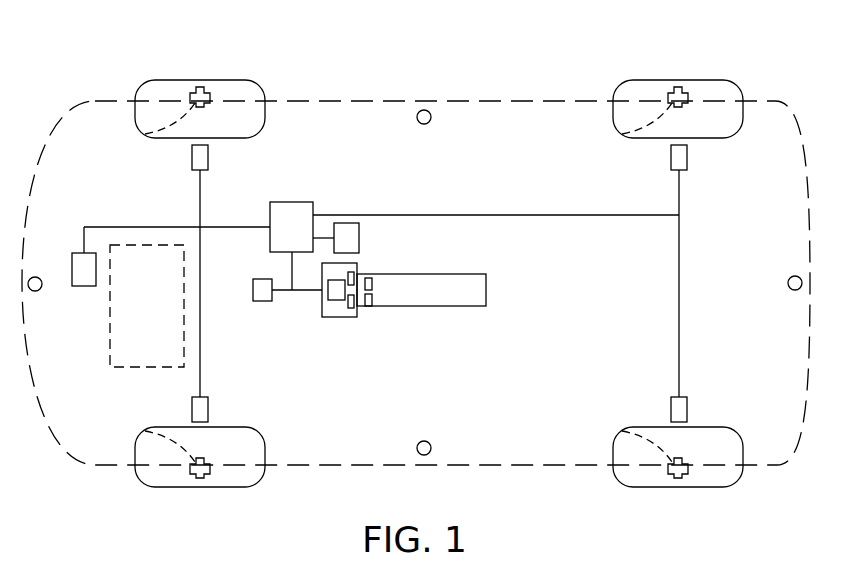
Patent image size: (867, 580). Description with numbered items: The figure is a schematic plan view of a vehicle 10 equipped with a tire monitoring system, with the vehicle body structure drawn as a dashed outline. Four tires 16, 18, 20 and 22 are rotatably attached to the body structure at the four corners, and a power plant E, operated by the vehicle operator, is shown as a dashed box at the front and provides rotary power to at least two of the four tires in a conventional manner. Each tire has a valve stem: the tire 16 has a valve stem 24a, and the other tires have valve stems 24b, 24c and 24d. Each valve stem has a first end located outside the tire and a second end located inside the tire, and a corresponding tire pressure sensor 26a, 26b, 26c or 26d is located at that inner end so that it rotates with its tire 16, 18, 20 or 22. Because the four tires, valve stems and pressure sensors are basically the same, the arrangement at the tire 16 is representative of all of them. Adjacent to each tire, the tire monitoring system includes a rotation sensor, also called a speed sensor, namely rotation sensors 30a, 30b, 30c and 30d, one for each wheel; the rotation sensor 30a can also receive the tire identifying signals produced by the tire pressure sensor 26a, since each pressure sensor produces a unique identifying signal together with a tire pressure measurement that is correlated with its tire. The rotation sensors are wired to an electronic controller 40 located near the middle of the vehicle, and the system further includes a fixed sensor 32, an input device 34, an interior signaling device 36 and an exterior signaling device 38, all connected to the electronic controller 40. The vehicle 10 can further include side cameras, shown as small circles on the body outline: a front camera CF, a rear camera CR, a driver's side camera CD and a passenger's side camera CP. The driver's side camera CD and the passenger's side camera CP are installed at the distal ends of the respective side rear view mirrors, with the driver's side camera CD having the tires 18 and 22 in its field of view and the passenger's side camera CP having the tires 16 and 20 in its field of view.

The vehicle 10 is at (522, 58).
The tire 16 is at (168, 80).
The tire 18 is at (168, 487).
The tire 20 is at (647, 80).
The tire 22 is at (647, 487).
The valve stem 24a is at (210, 88).
The valve stem 24b is at (215, 482).
The valve stem 24c is at (690, 88).
The valve stem 24d is at (693, 482).
The tire pressure sensor 26a is at (145, 134).
The tire pressure sensor 26b is at (145, 432).
The tire pressure sensor 26c is at (622, 134).
The tire pressure sensor 26d is at (622, 432).
The rotation sensor 30a is at (192, 157).
The rotation sensor 30b is at (208, 408).
The rotation sensor 30c is at (687, 157).
The rotation sensor 30d is at (687, 408).
The fixed sensor 32 is at (348, 240).
The input device 34 is at (337, 297).
The interior signaling device 36 is at (257, 295).
The exterior signaling device 38 is at (83, 275).
The electronic controller 40 is at (294, 215).
The power plant E is at (145, 332).
The passenger's side camera CP is at (428, 124).
The front camera CF is at (41, 290).
The rear camera CR is at (790, 278).
The driver's side camera CD is at (428, 441).